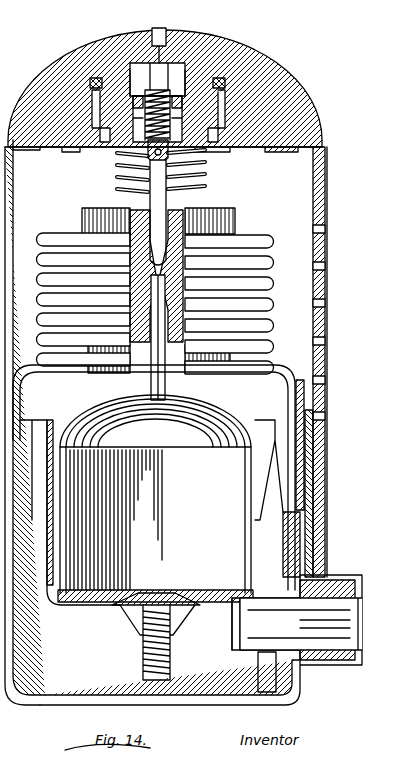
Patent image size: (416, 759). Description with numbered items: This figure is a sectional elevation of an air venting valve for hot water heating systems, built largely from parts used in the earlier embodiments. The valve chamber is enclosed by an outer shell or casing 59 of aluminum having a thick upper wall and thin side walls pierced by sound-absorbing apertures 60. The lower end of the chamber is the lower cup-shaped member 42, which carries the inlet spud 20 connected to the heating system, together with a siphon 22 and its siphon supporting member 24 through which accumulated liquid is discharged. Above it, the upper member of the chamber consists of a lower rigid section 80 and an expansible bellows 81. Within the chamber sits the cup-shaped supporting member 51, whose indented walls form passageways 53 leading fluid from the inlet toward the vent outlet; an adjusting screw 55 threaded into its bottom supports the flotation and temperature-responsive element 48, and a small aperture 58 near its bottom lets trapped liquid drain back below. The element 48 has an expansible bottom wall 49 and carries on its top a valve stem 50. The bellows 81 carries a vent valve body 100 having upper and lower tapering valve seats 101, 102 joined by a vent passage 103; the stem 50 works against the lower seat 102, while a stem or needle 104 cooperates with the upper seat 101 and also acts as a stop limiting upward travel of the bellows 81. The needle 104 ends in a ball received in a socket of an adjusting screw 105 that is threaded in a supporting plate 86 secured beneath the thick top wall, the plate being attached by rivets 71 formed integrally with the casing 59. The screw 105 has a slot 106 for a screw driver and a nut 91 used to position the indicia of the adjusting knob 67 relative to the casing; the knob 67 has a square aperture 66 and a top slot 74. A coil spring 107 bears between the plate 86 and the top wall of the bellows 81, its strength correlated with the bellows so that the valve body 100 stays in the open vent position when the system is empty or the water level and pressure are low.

The inlet spud 20 is at (325, 570).
The siphon 22 is at (350, 660).
The siphon supporting member 24 is at (258, 680).
The lower cup-shaped member 42 is at (318, 480).
The flotation and temperature-responsive element 48 is at (215, 420).
The expansible bottom wall 49 is at (116, 520).
The valve stem 50 is at (185, 375).
The cup-shaped supporting member 51 is at (258, 425).
The passageways 53 is at (300, 460).
The adjusting screw 55 is at (172, 652).
The small aperture 58 is at (47, 580).
The outer shell or casing 59 is at (285, 92).
The sound-absorbing apertures 60 is at (325, 300).
The aperture in adjusting knob 66 is at (172, 66).
The adjusting knob 67 is at (182, 84).
The rivets 71 is at (280, 152).
The slot 74 is at (163, 66).
The lower rigid section 80 is at (292, 372).
The bellows 81 is at (275, 248).
The supporting plate 86 is at (290, 138).
The nut 91 is at (96, 78).
The vent valve body 100 is at (175, 190).
The upper tapering valve seat 101 is at (120, 200).
The lower tapering valve seat 102 is at (150, 360).
The vent passage 103 is at (236, 222).
The stem or needle 104 is at (205, 162).
The adjusting screw 105 is at (188, 66).
The slot 106 is at (150, 36).
The coil spring 107 is at (115, 160).